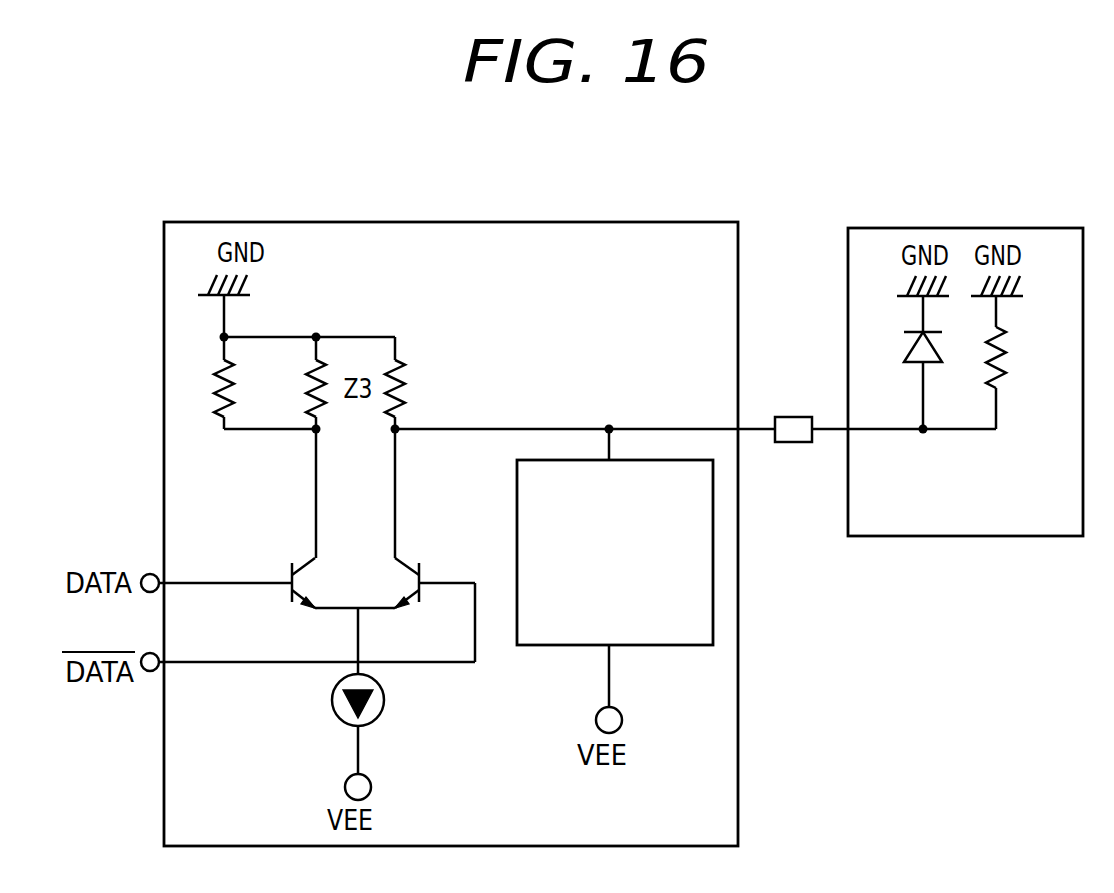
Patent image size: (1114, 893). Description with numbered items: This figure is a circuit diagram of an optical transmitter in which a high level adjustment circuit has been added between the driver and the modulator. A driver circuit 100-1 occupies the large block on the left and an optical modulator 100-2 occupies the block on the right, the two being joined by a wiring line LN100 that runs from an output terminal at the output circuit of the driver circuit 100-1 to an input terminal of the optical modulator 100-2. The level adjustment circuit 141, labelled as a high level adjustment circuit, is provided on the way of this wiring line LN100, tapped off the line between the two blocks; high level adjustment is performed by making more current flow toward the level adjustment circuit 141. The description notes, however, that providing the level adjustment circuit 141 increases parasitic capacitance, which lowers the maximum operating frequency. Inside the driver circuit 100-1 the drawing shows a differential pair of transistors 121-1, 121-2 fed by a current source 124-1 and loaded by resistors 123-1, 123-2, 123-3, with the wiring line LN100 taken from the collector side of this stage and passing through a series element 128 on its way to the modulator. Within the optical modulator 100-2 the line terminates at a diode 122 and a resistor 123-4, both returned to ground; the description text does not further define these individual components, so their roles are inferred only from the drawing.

The driver circuit 100-1 is at (355, 220).
The optical modulator 100-2 is at (943, 228).
The resistor Z3 123-1 is at (307, 383).
The resistor 123-2 is at (405, 378).
The resistor 123-3 is at (220, 380).
The resistor Z4 123-4 is at (1007, 367).
The transistor 121-1 is at (292, 568).
The transistor 121-2 is at (419, 570).
The current source 124-1 is at (332, 700).
The level adjustment circuit 141 is at (637, 646).
The impedance Z 128 is at (797, 448).
The diode 122 is at (920, 393).
The wiring line LN100 is at (447, 433).